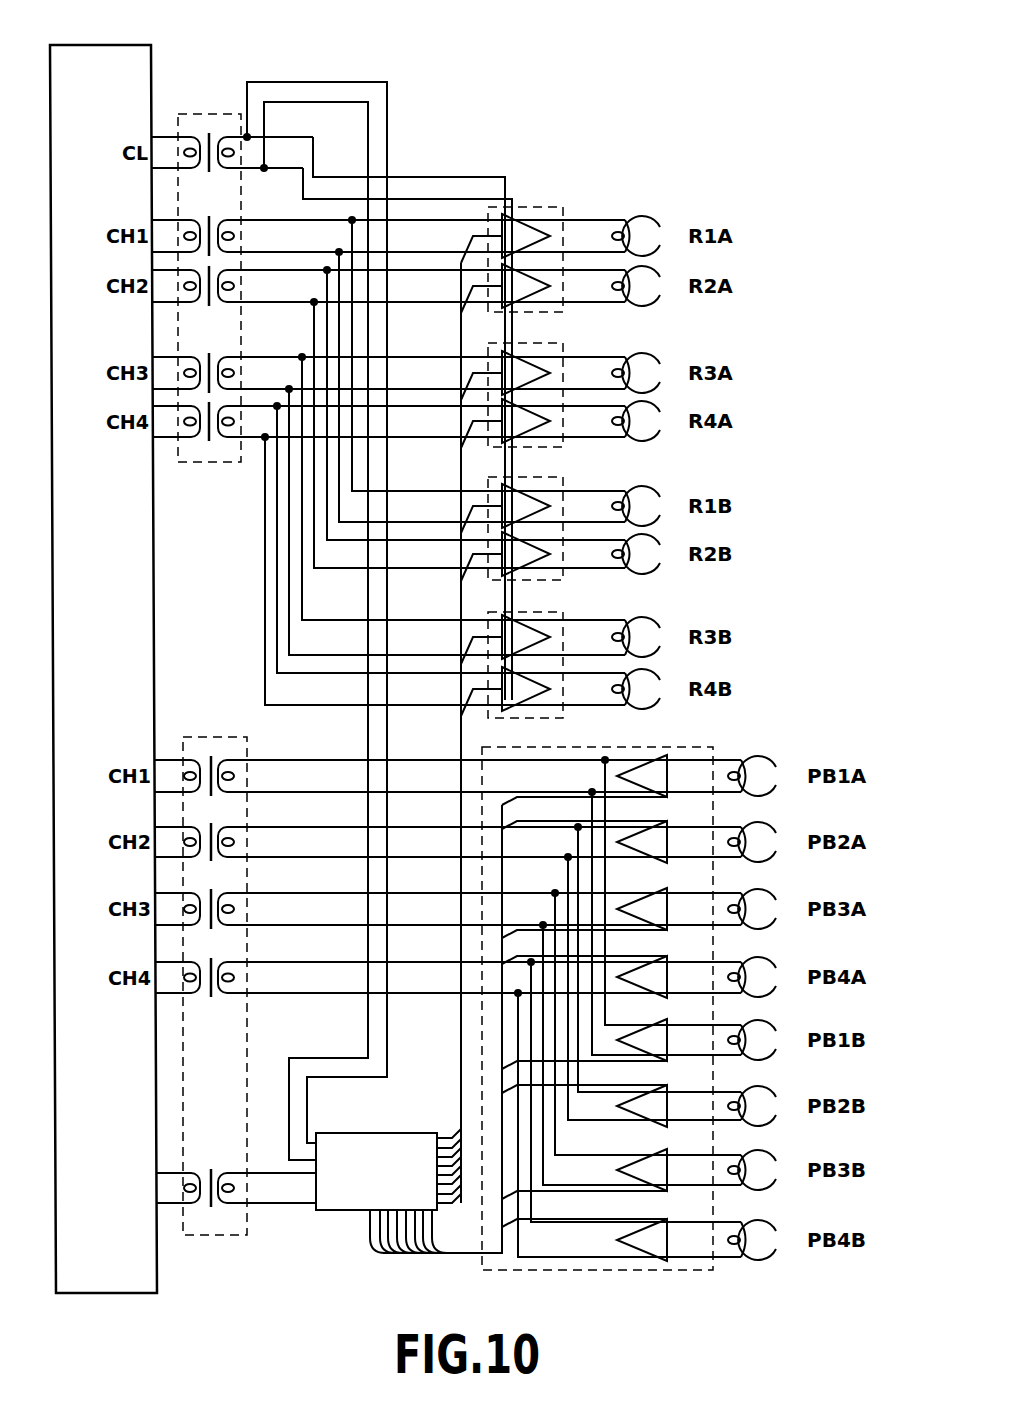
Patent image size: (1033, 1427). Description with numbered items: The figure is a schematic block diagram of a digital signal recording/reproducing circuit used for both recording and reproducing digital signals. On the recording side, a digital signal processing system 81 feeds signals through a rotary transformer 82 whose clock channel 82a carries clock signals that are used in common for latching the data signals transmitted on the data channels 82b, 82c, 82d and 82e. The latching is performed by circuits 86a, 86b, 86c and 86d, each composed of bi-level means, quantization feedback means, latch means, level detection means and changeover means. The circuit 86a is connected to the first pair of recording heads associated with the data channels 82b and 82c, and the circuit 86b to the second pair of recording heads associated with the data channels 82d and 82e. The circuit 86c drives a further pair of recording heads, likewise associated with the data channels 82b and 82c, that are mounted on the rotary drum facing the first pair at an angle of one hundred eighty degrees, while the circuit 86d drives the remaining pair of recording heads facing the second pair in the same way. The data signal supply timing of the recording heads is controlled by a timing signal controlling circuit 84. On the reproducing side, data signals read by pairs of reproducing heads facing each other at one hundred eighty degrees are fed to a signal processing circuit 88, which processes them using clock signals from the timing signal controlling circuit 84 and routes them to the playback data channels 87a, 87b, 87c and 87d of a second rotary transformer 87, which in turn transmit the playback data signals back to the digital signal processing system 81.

The digital signal processing system 81 is at (113, 45).
The rotary transformer 82 is at (207, 112).
The clock channel 82a is at (208, 171).
The data channel 82b is at (220, 214).
The data channel 82c is at (212, 306).
The data channel 82d is at (219, 350).
The data channel 82e is at (210, 443).
The timing signal controlling circuit 84 is at (393, 1133).
The circuit 86a is at (548, 207).
The circuit 86b is at (548, 343).
The circuit 86c is at (548, 477).
The circuit 86d is at (548, 612).
The rotary transformer 87 is at (212, 737).
The playback data channel 87a is at (216, 752).
The playback data channel 87b is at (216, 820).
The playback data channel 87c is at (216, 888).
The playback data channel 87d is at (216, 956).
The signal processing circuit 88 is at (650, 746).